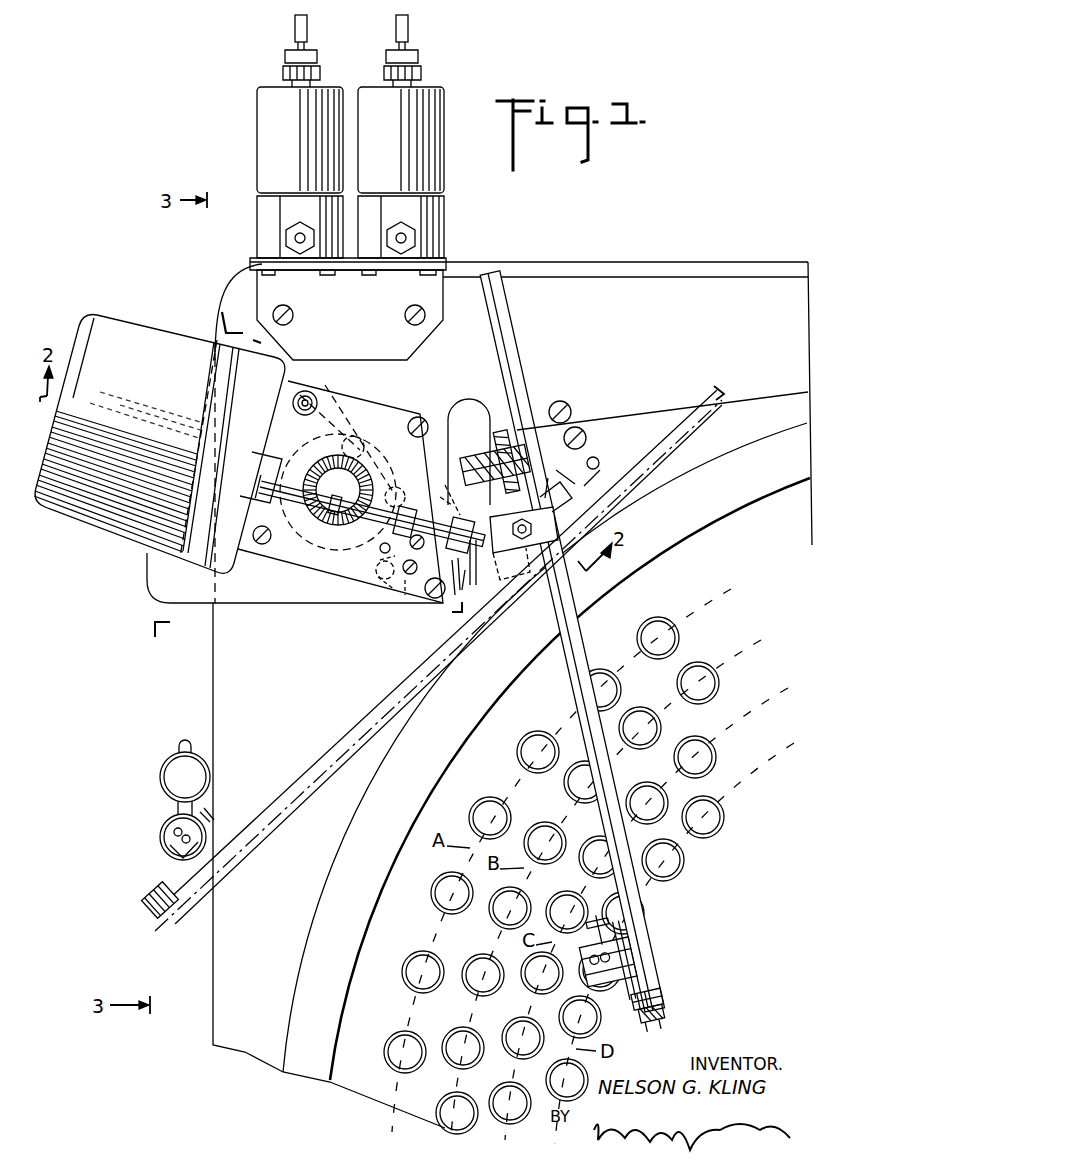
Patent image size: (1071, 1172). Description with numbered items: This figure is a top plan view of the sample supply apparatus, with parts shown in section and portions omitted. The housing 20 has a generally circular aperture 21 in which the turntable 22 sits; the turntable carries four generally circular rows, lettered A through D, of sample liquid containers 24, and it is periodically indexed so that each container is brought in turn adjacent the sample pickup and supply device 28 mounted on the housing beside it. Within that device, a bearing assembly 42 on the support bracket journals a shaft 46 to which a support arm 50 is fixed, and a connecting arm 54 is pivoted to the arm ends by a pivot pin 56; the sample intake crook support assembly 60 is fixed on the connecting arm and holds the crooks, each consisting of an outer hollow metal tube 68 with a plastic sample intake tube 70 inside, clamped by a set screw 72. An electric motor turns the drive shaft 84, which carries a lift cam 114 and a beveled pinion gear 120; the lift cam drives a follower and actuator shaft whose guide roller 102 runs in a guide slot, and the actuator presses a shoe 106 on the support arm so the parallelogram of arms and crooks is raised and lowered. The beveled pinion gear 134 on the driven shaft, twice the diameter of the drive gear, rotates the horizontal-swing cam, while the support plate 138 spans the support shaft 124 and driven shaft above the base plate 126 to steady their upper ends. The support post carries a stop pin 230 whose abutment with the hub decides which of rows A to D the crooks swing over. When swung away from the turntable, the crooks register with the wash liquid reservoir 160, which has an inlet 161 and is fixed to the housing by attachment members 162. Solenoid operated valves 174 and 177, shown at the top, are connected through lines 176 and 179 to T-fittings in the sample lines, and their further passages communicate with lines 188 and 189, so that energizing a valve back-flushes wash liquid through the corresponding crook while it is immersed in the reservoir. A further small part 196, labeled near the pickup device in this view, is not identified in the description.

The housing 20 is at (213, 697).
The circular aperture 21 is at (757, 458).
The turntable 22 is at (687, 533).
The sample liquid container 24 is at (700, 665).
The sample pickup and supply device 28 is at (448, 613).
The bearing assembly 42 is at (489, 426).
The shaft 46 is at (490, 456).
The support arm 50 is at (507, 338).
The connecting arm 54 is at (652, 983).
The pivot pin 56 is at (632, 1025).
The sample intake crook support assembly 60 is at (575, 925).
The outer hollow metal tube 68 is at (583, 967).
The plastic sample intake tube 70 is at (612, 957).
The set screw 72 is at (597, 925).
The drive shaft 84 is at (326, 510).
The guide roller 102 is at (418, 546).
The shoe 106 is at (546, 526).
The lift cam 114 is at (552, 496).
The beveled pinion gear 120 is at (362, 470).
The support shaft 124 is at (312, 398).
The base plate 126 is at (262, 601).
The beveled pinion gear 134 is at (331, 527).
The support plate 138 is at (386, 534).
The wash liquid reservoir 160 is at (160, 832).
The inlet 161 is at (196, 758).
The attachment member 162 is at (163, 873).
The solenoid operated valve 174 is at (263, 116).
The line 176 is at (296, 238).
The solenoid operated valve 177 is at (444, 131).
The line 179 is at (418, 238).
The line 188 is at (294, 27).
The line 189 is at (410, 31).
The pin 196 is at (463, 570).
The stop pin 230 is at (464, 492).